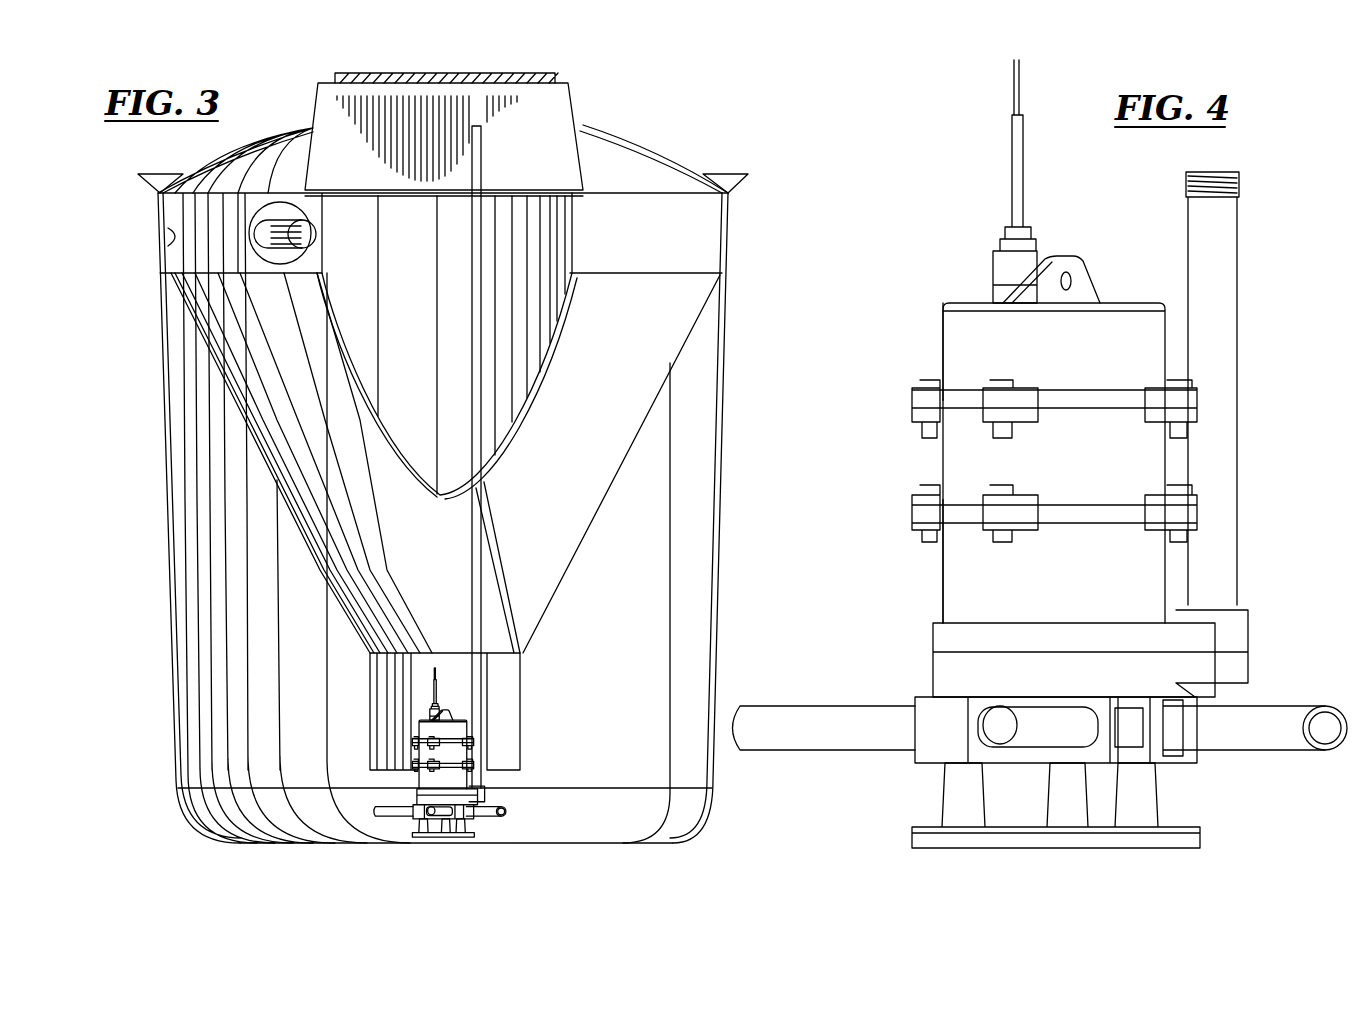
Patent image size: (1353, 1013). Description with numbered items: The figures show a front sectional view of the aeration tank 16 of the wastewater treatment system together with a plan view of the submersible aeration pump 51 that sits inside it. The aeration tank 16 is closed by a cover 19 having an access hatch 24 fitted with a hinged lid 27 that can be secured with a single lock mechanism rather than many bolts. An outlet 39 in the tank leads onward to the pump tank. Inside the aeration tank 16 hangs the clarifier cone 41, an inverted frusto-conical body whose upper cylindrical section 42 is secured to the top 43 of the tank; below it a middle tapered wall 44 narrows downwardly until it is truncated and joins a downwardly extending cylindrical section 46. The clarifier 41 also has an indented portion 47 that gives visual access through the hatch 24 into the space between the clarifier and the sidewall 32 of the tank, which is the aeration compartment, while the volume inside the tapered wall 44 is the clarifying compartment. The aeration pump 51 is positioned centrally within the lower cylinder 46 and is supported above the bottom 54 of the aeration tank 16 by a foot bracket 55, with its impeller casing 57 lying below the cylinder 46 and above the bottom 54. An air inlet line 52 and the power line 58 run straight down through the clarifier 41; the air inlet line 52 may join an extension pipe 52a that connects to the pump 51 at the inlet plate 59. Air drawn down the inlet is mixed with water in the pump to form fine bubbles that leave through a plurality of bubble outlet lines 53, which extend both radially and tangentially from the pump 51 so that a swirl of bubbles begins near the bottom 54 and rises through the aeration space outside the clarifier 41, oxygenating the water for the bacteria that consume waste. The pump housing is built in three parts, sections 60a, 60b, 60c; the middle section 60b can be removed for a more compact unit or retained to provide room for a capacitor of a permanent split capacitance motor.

In FIG. 3, the aeration tank 16 is at (728, 404).
In FIG. 3, the cover 19 is at (632, 140).
In FIG. 3, the access hatch 24 is at (582, 98).
In FIG. 3, the hinged lid 27 is at (428, 72).
In FIG. 3, the sidewall 32 is at (700, 540).
In FIG. 3, the outlet 39 is at (282, 268).
In FIG. 3, the clarifier cone 41 is at (264, 460).
In FIG. 3, the upper cylindrical section 42 is at (166, 235).
In FIG. 3, the top 43 is at (156, 207).
In FIG. 3, the middle tapered wall 44 is at (235, 388).
In FIG. 3, the downwardly extending cylindrical section 46 is at (370, 705).
In FIG. 3, the indented portion 47 is at (534, 393).
In FIG. 3, the aeration pump 51 is at (415, 774).
In FIG. 4, the aeration pump 51 is at (925, 348).
In FIG. 3, the air inlet line 52 is at (468, 338).
In FIG. 4, the extension pipe 52a is at (1238, 368).
In FIG. 3, the bubble outlet lines 53 is at (372, 812).
In FIG. 4, the bubble outlet lines 53 is at (825, 705).
In FIG. 3, the bottom 54 is at (563, 840).
In FIG. 3, the foot bracket 55 is at (420, 826).
In FIG. 4, the foot bracket 55 is at (946, 799).
In FIG. 4, the impeller casing 57 is at (1166, 765).
In FIG. 3, the power line 58 is at (435, 707).
In FIG. 4, the power line 58 is at (1022, 168).
In FIG. 4, the inlet plate 59 is at (1252, 633).
In FIG. 4, the housing section 60a is at (940, 575).
In FIG. 4, the housing section 60b is at (940, 453).
In FIG. 4, the housing section 60c is at (940, 352).